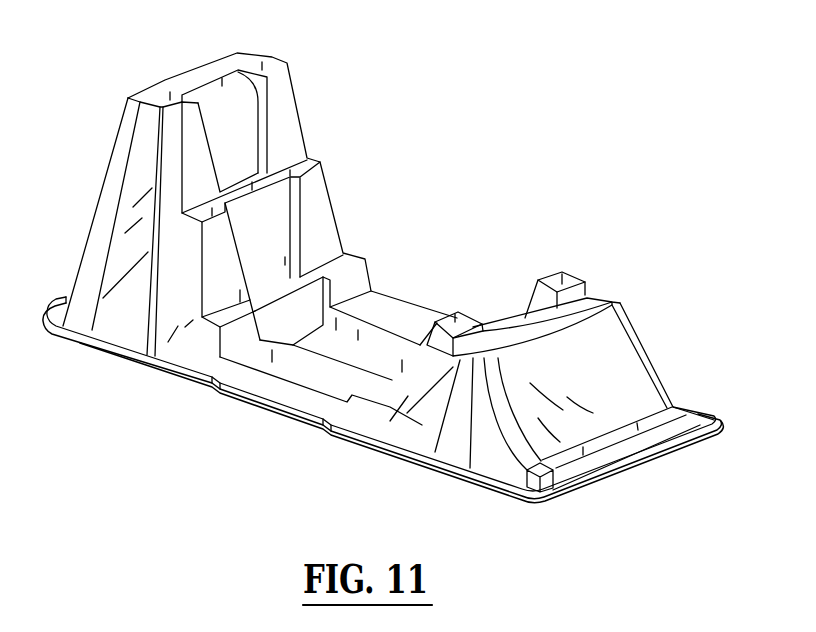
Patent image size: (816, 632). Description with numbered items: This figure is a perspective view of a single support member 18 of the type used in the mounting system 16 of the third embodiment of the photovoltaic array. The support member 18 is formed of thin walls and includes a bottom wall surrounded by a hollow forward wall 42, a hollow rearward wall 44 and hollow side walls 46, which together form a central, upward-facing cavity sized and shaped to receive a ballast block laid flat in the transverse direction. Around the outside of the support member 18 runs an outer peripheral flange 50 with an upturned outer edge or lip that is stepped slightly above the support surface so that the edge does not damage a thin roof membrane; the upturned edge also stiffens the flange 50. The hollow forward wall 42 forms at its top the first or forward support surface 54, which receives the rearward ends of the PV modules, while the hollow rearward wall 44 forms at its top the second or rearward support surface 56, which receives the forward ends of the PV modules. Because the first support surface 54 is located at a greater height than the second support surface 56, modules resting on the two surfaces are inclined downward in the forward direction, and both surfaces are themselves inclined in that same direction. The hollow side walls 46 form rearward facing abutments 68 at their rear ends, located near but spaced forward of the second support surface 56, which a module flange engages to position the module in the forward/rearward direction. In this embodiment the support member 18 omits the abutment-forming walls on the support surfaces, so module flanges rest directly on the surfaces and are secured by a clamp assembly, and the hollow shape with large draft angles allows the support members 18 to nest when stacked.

The mounting system 16 is at (500, 184).
The support member 18 is at (362, 462).
The forward wall 42 is at (107, 172).
The rearward wall 44 is at (600, 367).
The side wall 46 is at (422, 425).
The outer peripheral flange 50 is at (143, 362).
The first support surface 54 is at (197, 80).
The second support surface 56 is at (517, 338).
The rearward facing abutment 68 is at (462, 338).